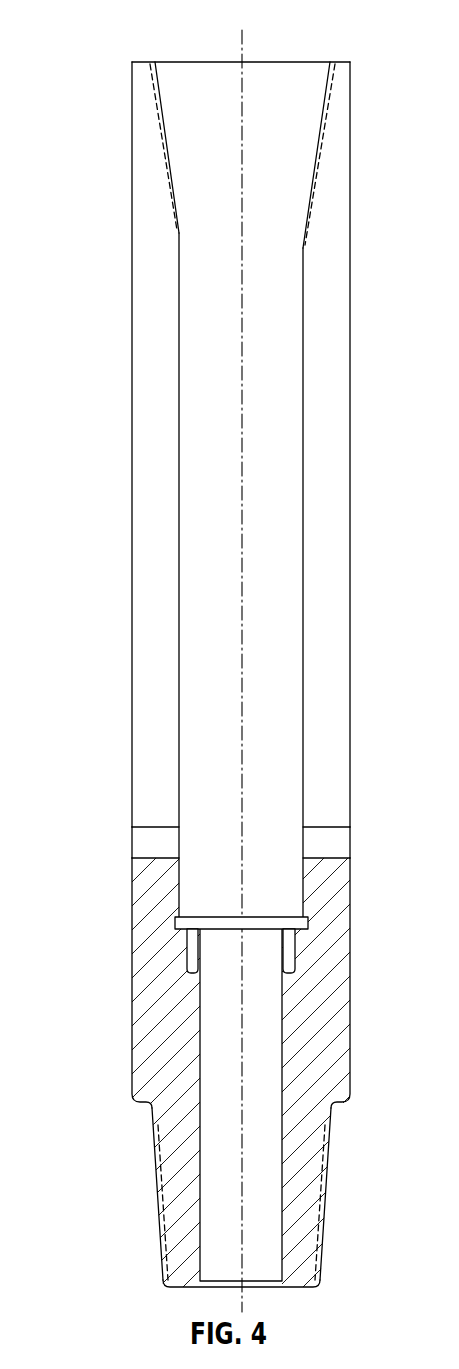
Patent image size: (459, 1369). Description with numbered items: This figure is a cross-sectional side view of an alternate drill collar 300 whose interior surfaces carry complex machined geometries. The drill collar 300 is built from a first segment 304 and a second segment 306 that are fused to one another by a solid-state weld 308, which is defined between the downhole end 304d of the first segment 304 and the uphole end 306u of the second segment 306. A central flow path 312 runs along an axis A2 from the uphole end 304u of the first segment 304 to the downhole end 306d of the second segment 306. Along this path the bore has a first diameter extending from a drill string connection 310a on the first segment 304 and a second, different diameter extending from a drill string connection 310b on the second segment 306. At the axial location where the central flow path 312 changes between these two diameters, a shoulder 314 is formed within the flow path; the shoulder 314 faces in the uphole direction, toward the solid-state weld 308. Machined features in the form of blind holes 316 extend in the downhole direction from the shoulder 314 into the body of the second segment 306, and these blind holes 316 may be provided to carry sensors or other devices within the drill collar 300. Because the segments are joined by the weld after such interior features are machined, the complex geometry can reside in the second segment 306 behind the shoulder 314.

The drill collar 300 is at (340, 28).
The first segment 304 is at (337, 218).
The uphole end of the first segment 304u is at (136, 58).
The downhole end of the first segment 304d is at (148, 832).
The drill string connection 310a is at (165, 128).
The central flow path 312 is at (283, 540).
The axis A2 is at (242, 327).
The solid-state weld 308 is at (340, 842).
The second segment 306 is at (333, 1067).
The uphole end of the second segment 306u is at (170, 855).
The downhole end of the second segment 306d is at (186, 1289).
The drill string connection 310b is at (325, 1218).
The shoulder 314 is at (301, 916).
The blind holes 316 is at (192, 955).